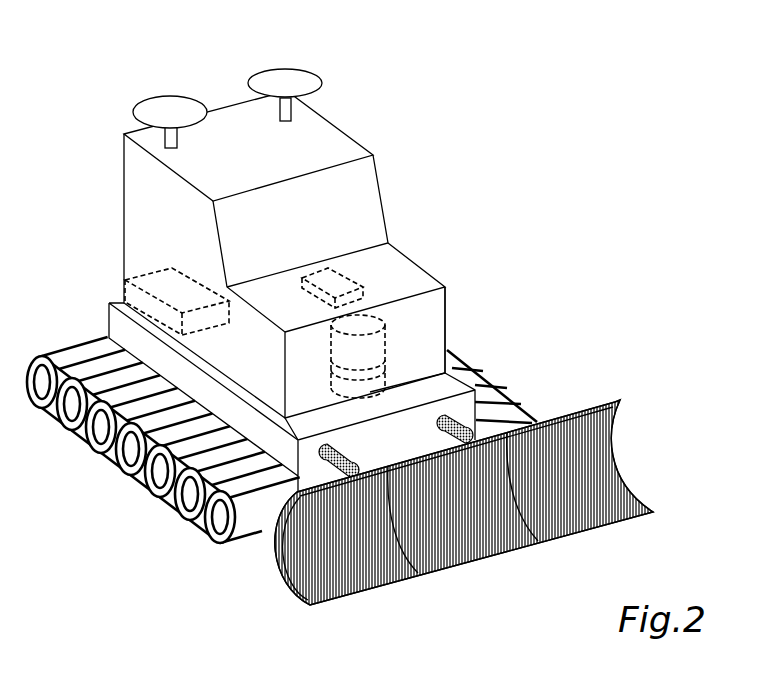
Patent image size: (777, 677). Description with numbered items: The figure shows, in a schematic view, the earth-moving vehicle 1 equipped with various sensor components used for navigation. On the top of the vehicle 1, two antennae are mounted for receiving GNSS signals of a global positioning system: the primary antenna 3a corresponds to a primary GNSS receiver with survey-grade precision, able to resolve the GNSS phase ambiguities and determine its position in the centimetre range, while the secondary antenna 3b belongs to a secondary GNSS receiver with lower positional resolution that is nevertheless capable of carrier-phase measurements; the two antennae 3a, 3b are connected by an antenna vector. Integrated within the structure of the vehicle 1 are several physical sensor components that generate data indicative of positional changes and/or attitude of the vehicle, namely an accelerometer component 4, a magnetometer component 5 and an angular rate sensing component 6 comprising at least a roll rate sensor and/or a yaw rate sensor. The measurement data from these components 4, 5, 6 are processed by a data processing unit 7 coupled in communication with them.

The earth-moving vehicle 1 is at (442, 193).
The primary antenna 3a is at (163, 107).
The secondary antenna 3b is at (282, 82).
The accelerometer component 4 is at (345, 282).
The magnetometer component 5 is at (360, 331).
The angular rate sensing component 6 is at (360, 381).
The data processing unit 7 is at (165, 290).